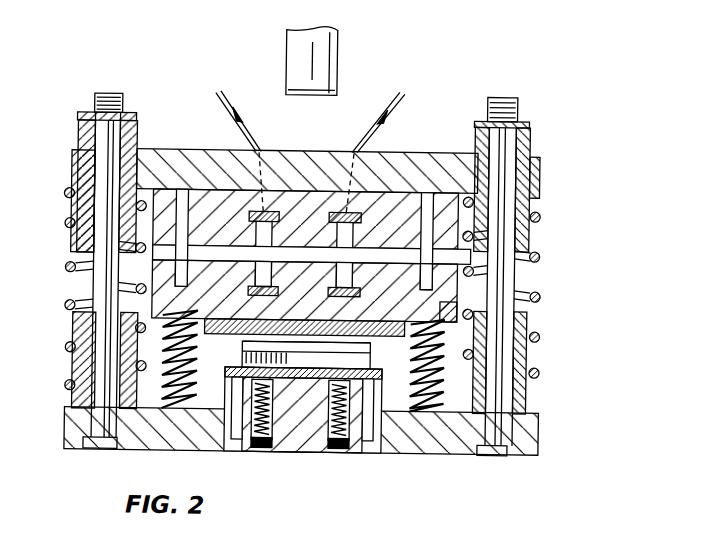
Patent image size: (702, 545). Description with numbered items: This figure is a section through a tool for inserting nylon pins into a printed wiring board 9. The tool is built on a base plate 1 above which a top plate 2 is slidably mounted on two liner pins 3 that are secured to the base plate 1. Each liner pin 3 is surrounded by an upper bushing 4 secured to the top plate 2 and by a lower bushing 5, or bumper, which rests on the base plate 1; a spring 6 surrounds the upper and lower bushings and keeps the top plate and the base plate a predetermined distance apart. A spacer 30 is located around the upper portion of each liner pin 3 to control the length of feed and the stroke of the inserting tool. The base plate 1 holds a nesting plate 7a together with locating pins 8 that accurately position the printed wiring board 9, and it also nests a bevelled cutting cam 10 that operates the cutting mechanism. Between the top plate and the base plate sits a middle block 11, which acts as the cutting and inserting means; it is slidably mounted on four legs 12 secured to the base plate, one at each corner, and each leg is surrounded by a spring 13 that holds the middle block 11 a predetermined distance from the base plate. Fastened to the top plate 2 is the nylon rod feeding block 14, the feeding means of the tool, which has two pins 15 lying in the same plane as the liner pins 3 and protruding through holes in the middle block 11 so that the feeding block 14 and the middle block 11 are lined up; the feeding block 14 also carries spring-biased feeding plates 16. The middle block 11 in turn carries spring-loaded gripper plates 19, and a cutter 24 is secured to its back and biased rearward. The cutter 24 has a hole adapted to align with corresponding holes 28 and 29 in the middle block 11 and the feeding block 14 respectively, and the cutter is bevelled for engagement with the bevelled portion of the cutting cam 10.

The base plate 1 is at (423, 453).
The top plate 2 is at (381, 152).
The liner pin 3 is at (93, 131).
The upper bushing 4 is at (70, 217).
The lower bushing 5 is at (73, 339).
The spring 6 is at (65, 271).
The nesting plate 7a is at (300, 453).
The locating pin 8 is at (268, 454).
The printed wiring board 9 is at (251, 362).
The bevelled cutting cam 10 is at (371, 352).
The middle block 11 is at (455, 312).
The leg 12 is at (166, 373).
The spring 13 is at (233, 392).
The nylon rod feeding block 14 is at (440, 215).
The pin 15 is at (175, 256).
The feeding plate 16 is at (255, 226).
The gripper plate 19 is at (256, 281).
The cutter 24 is at (300, 322).
The hole 28 is at (260, 297).
The hole 29 is at (261, 212).
The spacer 30 is at (132, 128).